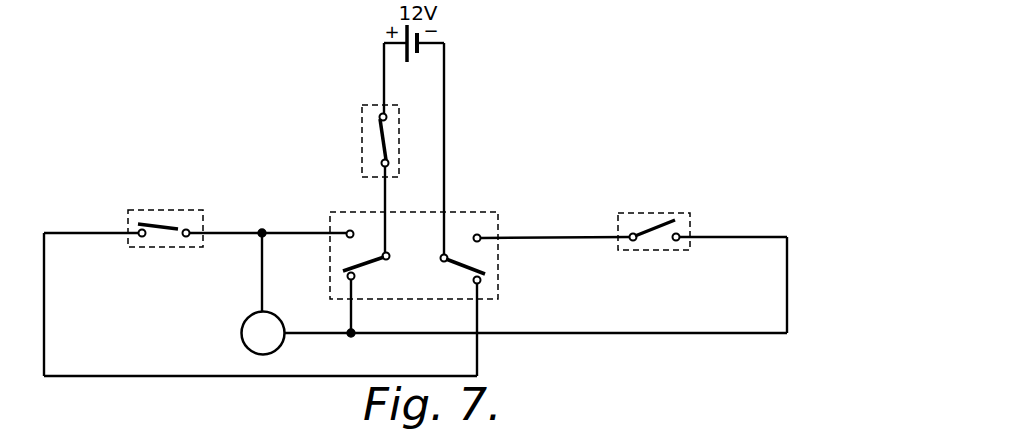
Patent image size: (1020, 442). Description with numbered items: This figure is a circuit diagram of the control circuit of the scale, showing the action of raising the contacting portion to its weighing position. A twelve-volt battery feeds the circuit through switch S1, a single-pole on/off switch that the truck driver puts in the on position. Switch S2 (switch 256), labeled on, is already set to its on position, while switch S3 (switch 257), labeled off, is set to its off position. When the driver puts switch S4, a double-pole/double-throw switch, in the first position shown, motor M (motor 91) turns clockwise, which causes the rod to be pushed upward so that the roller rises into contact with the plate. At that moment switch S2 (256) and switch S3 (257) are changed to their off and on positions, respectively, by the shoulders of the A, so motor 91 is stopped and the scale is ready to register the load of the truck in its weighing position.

The switch S2 256 is at (196, 224).
The switch S3 257 is at (612, 221).
The motor 91 is at (241, 333).
The single-pole on/off switch S1 is at (367, 141).
The switch S2 is at (165, 229).
The switch S3 is at (654, 234).
The double-pole/double-throw switch S4 is at (414, 268).